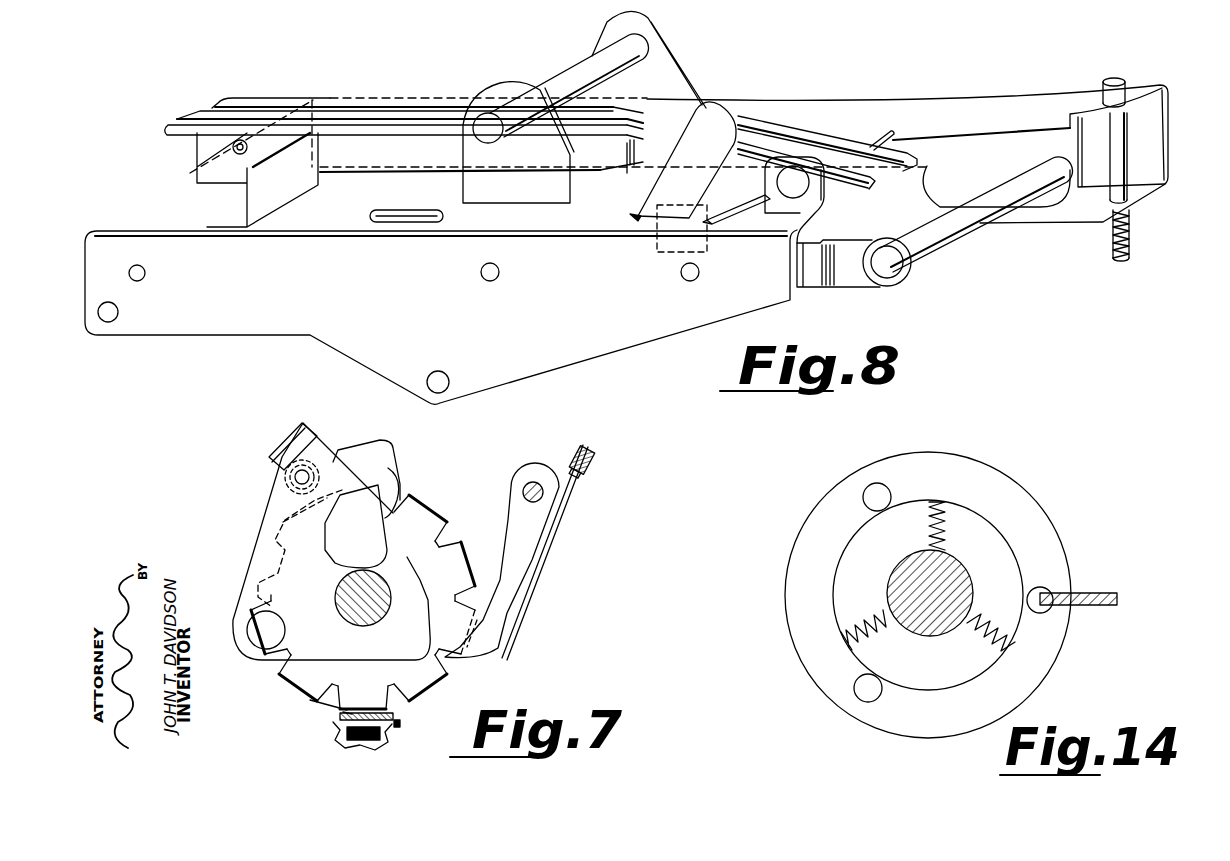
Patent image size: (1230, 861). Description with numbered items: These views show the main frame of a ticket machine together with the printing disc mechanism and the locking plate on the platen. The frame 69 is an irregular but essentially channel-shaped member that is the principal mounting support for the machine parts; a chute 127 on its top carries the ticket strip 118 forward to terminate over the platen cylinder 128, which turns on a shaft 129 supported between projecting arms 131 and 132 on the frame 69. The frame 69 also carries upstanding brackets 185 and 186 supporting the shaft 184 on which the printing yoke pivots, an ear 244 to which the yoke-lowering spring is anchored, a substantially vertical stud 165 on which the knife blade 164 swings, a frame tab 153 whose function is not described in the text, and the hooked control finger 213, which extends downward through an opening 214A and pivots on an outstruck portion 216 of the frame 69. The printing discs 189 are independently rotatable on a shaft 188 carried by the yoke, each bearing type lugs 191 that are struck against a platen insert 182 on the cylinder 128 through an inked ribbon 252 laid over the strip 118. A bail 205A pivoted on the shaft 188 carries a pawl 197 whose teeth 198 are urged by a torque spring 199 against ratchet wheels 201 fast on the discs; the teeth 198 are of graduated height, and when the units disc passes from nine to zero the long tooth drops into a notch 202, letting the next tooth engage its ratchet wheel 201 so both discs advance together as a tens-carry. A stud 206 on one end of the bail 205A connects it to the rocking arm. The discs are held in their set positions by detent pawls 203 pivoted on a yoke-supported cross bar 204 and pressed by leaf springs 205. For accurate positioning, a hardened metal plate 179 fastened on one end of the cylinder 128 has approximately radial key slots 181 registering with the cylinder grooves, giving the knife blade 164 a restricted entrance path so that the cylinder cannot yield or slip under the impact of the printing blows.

In FIG. 8, the chute 127 is at (268, 103).
In FIG. 8, the ear 244 is at (245, 153).
In FIG. 8, the upstanding bracket 185 is at (468, 183).
In FIG. 8, the shaft 184 is at (568, 72).
In FIG. 8, the upstanding bracket 186 is at (663, 55).
In FIG. 8, the hooked control finger 213 is at (710, 117).
In FIG. 8, the opening 214A is at (631, 214).
In FIG. 8, the outstruck portion 216 is at (660, 253).
In FIG. 8, the mounting tab 153 is at (815, 190).
In FIG. 8, the frame 69 is at (878, 109).
In FIG. 8, the stud 165 is at (1123, 158).
In FIG. 8, the projecting arm 132 is at (1055, 197).
In FIG. 8, the shaft 129 is at (943, 233).
In FIG. 14, the shaft 129 is at (902, 570).
In FIG. 8, the projecting arm 131 is at (857, 280).
In FIG. 7, the torque spring 199 is at (327, 443).
In FIG. 7, the bail 205A is at (277, 457).
In FIG. 7, the pawl 197 is at (387, 458).
In FIG. 7, the teeth 198 is at (385, 500).
In FIG. 7, the ratchet wheel 201 is at (433, 557).
In FIG. 7, the notch 202 is at (380, 537).
In FIG. 7, the cross bar 204 is at (530, 490).
In FIG. 7, the leaf spring 205 is at (538, 553).
In FIG. 7, the detent pawl 203 is at (480, 650).
In FIG. 7, the stud 206 is at (250, 643).
In FIG. 7, the shaft 188 is at (350, 613).
In FIG. 7, the printing disc 189 is at (328, 700).
In FIG. 7, the type lugs 191 is at (343, 713).
In FIG. 7, the inked ribbon 252 is at (397, 715).
In FIG. 7, the strip 118 is at (400, 723).
In FIG. 7, the platen insert 182 is at (387, 730).
In FIG. 7, the platen cylinder 128 is at (367, 747).
In FIG. 14, the key slots 181 is at (870, 488).
In FIG. 14, the hardened metal plate 179 is at (1053, 542).
In FIG. 14, the knife blade 164 is at (1117, 598).